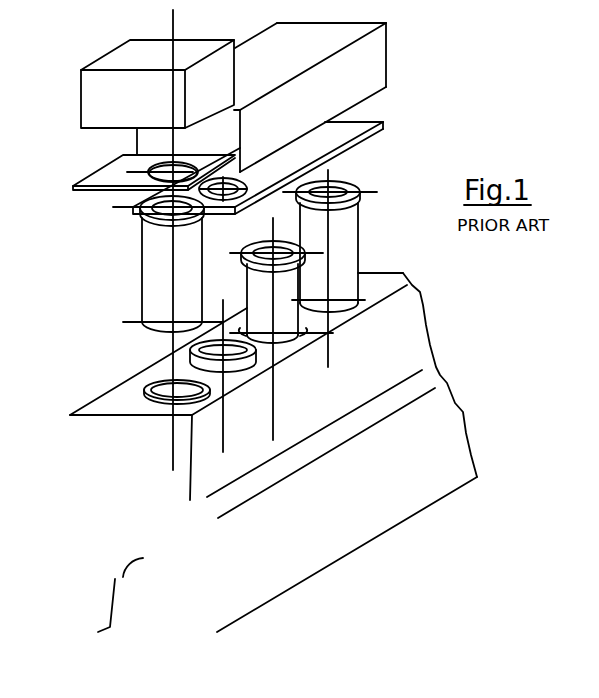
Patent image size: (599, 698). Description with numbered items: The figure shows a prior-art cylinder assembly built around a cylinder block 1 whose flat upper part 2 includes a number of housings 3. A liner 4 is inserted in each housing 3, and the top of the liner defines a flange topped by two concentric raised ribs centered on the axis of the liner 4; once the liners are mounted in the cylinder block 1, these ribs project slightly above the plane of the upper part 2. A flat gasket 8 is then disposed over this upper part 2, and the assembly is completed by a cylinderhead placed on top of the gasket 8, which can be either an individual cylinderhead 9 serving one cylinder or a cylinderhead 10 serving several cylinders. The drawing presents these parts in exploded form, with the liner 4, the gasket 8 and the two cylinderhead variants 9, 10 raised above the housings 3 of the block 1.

The cylinder block 1 is at (253, 452).
The flat upper part 2 is at (120, 408).
The housing 3 is at (147, 390).
The liner 4 is at (160, 275).
The flat gasket 8 is at (117, 177).
The individual cylinderhead 9 is at (147, 85).
The cylinderhead for several cylinders 10 is at (377, 64).